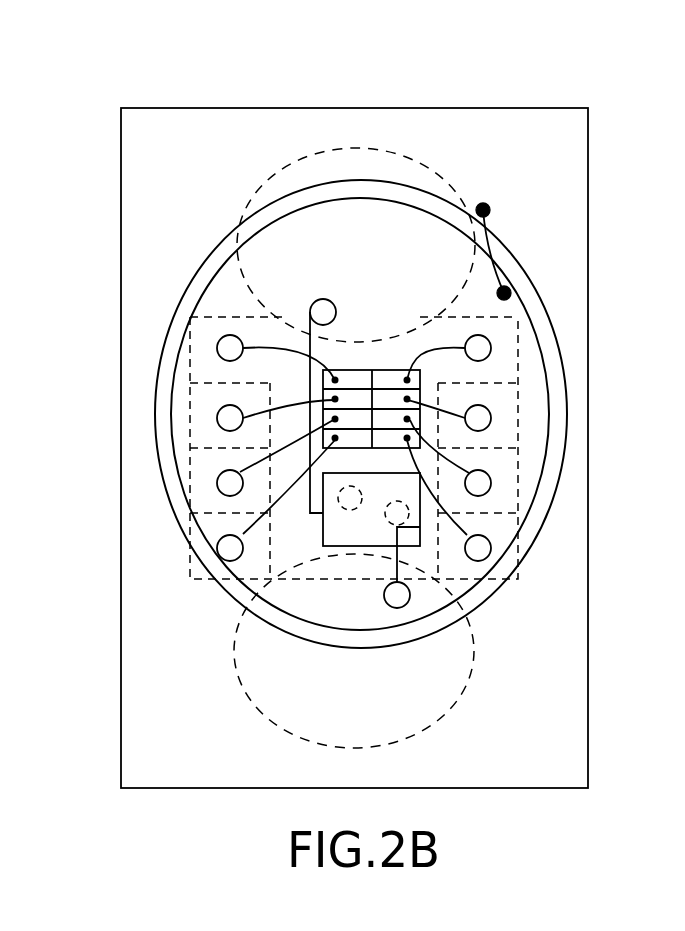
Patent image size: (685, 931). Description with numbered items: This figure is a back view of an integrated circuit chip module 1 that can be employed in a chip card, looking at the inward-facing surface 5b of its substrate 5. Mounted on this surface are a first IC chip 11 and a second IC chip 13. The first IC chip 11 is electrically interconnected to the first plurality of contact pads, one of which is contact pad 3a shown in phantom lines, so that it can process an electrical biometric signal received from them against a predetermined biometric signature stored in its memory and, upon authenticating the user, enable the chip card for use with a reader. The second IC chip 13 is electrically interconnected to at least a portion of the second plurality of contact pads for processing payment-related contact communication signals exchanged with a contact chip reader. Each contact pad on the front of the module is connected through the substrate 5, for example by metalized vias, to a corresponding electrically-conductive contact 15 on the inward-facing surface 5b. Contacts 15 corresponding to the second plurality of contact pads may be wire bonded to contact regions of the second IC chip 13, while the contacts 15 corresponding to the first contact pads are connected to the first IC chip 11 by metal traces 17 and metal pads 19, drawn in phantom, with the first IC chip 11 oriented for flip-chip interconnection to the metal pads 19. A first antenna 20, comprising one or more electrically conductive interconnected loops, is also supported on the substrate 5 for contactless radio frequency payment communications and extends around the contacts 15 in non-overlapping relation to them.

The IC chip module 1 is at (275, 69).
The substrate 5 is at (152, 108).
The inward-facing surface 5b is at (547, 130).
The contact pad 3a is at (403, 156).
The first antenna 20 is at (162, 358).
The second IC chip 13 is at (381, 370).
The first IC chip 11 is at (358, 546).
The electrically-conductive contacts 15 is at (313, 300).
The metal traces 17 is at (310, 503).
The metal pads 19 is at (343, 513).